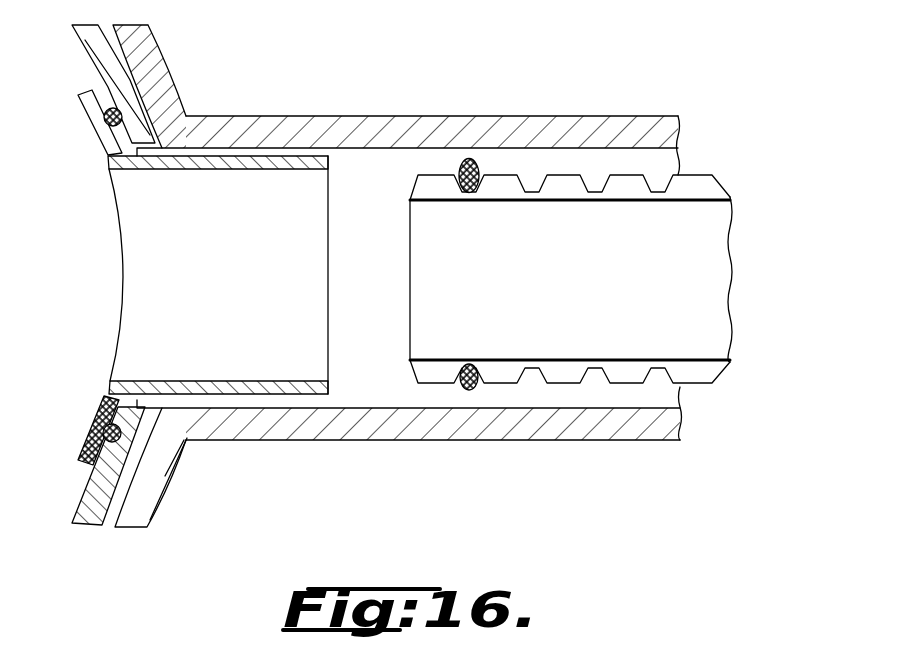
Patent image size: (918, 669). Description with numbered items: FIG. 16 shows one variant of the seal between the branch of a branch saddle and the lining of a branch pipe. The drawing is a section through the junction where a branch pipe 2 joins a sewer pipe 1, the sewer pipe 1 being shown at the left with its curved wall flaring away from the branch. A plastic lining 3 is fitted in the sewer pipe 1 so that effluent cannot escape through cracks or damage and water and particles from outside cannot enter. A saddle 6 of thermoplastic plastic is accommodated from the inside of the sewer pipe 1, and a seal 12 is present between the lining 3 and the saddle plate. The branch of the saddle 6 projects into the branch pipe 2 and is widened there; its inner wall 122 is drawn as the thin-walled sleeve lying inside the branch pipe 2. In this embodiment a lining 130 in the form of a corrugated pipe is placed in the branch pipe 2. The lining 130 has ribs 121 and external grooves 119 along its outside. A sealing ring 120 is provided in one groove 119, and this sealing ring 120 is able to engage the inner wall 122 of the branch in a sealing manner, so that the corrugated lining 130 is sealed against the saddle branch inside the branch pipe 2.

The sewer pipe 1 is at (155, 58).
The branch pipe 2 is at (480, 122).
The plastic lining 3 is at (90, 42).
The saddle 6 is at (107, 148).
The seal 12 is at (100, 415).
The external grooves 119 is at (472, 362).
The sealing ring 120 is at (486, 186).
The ribs 121 is at (695, 183).
The inner wall of branch 122 is at (233, 163).
The lining 130 is at (743, 240).